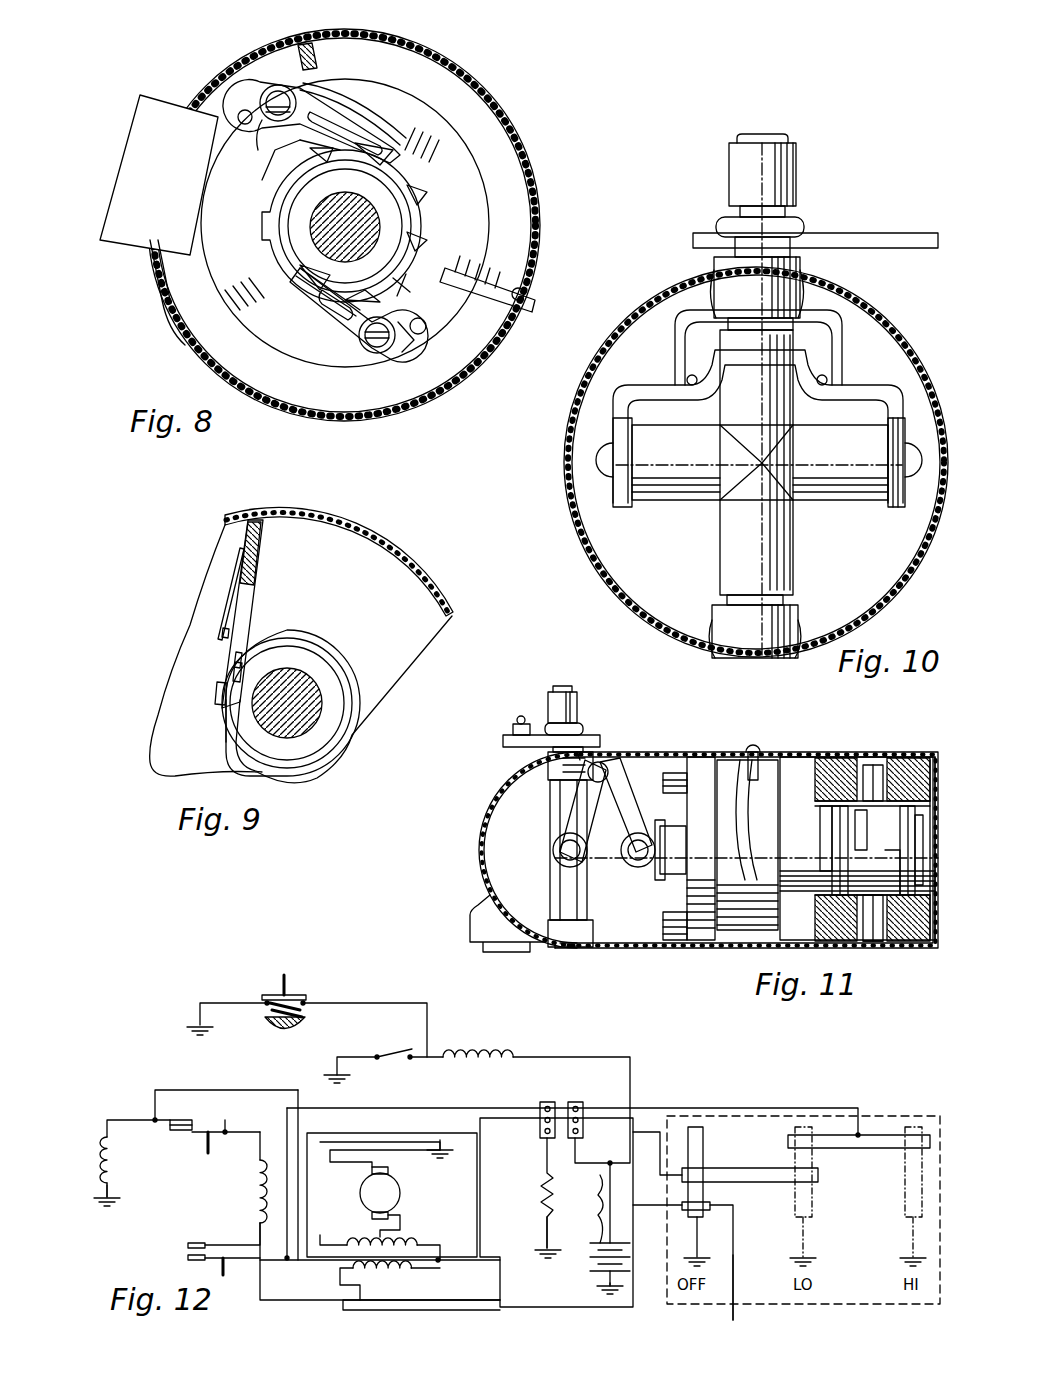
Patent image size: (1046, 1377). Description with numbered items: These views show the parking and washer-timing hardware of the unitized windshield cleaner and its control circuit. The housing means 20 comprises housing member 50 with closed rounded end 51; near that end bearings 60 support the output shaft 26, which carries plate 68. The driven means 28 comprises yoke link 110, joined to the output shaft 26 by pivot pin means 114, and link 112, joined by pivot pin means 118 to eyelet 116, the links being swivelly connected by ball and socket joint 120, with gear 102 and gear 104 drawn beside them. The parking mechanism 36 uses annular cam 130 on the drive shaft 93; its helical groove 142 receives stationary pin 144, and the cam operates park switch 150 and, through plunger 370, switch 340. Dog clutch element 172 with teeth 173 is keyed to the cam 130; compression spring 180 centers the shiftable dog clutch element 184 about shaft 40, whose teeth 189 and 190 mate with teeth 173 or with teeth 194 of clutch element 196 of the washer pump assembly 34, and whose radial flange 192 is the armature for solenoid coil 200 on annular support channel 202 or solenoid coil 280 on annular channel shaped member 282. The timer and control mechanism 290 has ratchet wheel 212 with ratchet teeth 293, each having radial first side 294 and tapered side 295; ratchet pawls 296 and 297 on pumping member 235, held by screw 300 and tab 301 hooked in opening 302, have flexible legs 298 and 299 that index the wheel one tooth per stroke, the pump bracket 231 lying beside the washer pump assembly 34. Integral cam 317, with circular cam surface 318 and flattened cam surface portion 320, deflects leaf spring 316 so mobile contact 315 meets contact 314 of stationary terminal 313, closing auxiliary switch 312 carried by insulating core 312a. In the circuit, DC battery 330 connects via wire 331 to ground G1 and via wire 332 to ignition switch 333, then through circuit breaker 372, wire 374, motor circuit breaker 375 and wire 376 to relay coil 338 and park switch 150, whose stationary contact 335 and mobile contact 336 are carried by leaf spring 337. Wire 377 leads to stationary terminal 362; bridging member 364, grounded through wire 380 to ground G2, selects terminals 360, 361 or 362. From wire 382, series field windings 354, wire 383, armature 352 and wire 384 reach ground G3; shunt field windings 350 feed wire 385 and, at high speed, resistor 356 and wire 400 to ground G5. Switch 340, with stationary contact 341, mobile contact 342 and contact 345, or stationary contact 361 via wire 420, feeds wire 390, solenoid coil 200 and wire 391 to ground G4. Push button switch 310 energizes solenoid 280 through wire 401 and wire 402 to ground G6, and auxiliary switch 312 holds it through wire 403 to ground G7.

In FIG. 8, the housing means 20 is at (478, 62).
In FIG. 9, the housing means 20 is at (370, 522).
In FIG. 10, the housing means 20 is at (880, 300).
In FIG. 11, the housing means 20 is at (672, 750).
In FIG. 8, the housing member 50 is at (500, 150).
In FIG. 9, the housing member 50 is at (420, 562).
In FIG. 10, the housing member 50 is at (905, 574).
In FIG. 11, the housing member 50 is at (626, 946).
In FIG. 8, the drive shaft 93 is at (330, 215).
In FIG. 9, the drive shaft 93 is at (306, 706).
In FIG. 8, the annular plastic cam 317 is at (322, 240).
In FIG. 9, the annular plastic cam 317 is at (330, 668).
In FIG. 8, the circular cam surface 318 is at (292, 256).
In FIG. 9, the circular cam surface 318 is at (355, 740).
In FIG. 8, the flattened cam surface portion 320 is at (290, 212).
In FIG. 9, the flattened cam surface portion 320 is at (228, 722).
In FIG. 8, the ratchet teeth 293 is at (425, 198).
In FIG. 8, the first side of ratchet tooth 294 is at (395, 152).
In FIG. 8, the tapered side of ratchet tooth 295 is at (428, 240).
In FIG. 8, the ratchet wheel 212 is at (405, 285).
In FIG. 8, the screw 300 is at (276, 85).
In FIG. 8, the tab 301 is at (262, 124).
In FIG. 8, the opening 302 is at (240, 112).
In FIG. 8, the flexible leg 299 is at (340, 125).
In FIG. 8, the flexible leg 298 is at (370, 135).
In FIG. 8, the ratchet pawl 296 is at (314, 58).
In FIG. 8, the pumping member 235 is at (322, 140).
In FIG. 8, the washer pump assembly 34 is at (118, 246).
In FIG. 8, the bracket 231 is at (158, 262).
In FIG. 8, the ratchet pawl 297 is at (426, 356).
In FIG. 8, the timer and control mechanism 290 is at (340, 365).
In FIG. 9, the timer and control mechanism 290 is at (330, 620).
In FIG. 9, the auxiliary switch 312 is at (240, 572).
In FIG. 12, the auxiliary switch 312 is at (398, 1053).
In FIG. 9, the insulating core 312a is at (252, 556).
In FIG. 9, the stationary terminal 313 is at (222, 612).
In FIG. 9, the contact 314 is at (224, 640).
In FIG. 9, the mobile contact 315 is at (238, 664).
In FIG. 9, the leaf spring 316 is at (248, 630).
In FIG. 10, the output shaft 26 is at (745, 190).
In FIG. 11, the output shaft 26 is at (553, 706).
In FIG. 10, the plate 68 is at (860, 240).
In FIG. 11, the plate 68 is at (515, 741).
In FIG. 10, the bearings 60 is at (735, 272).
In FIG. 11, the bearings 60 is at (565, 766).
In FIG. 10, the driven means 28 is at (822, 366).
In FIG. 11, the driven means 28 is at (564, 820).
In FIG. 10, the link 110 is at (895, 395).
In FIG. 11, the link 110 is at (566, 830).
In FIG. 10, the pivot pin means 114 is at (606, 460).
In FIG. 11, the pivot pin means 114 is at (570, 852).
In FIG. 11, the pivot pin means 118 is at (638, 852).
In FIG. 11, the ball and socket joint 120 is at (588, 768).
In FIG. 11, the link 112 is at (622, 790).
In FIG. 11, the eyelet 116 is at (660, 870).
In FIG. 11, the gear 102 is at (672, 794).
In FIG. 11, the gear 104 is at (670, 930).
In FIG. 11, the park switch 150 is at (702, 782).
In FIG. 11, the annular cam 130 is at (740, 900).
In FIG. 11, the helical groove 142 is at (762, 790).
In FIG. 11, the stationary pin 144 is at (748, 752).
In FIG. 11, the dog clutch element 172 is at (802, 850).
In FIG. 11, the solenoid coil 200 is at (830, 775).
In FIG. 12, the solenoid coil 200 is at (100, 1140).
In FIG. 11, the shaft 40 is at (875, 768).
In FIG. 11, the annular channel shaped member 282 is at (915, 773).
In FIG. 11, the dogs or teeth 173 is at (825, 805).
In FIG. 11, the compression spring 180 is at (832, 838).
In FIG. 11, the dogs or teeth 189 is at (900, 830).
In FIG. 11, the teeth 194 is at (900, 845).
In FIG. 11, the dogs or teeth 190 is at (900, 858).
In FIG. 11, the clutch element 196 is at (900, 878).
In FIG. 11, the annular support channel 202 is at (826, 888).
In FIG. 11, the shiftable dog clutch element 184 is at (880, 941).
In FIG. 11, the radial flange 192 is at (873, 941).
In FIG. 11, the solenoid coil 280 is at (935, 900).
In FIG. 12, the solenoid coil 280 is at (485, 1050).
In FIG. 11, the closed rounded end 51 is at (482, 860).
In FIG. 11, the parking mechanism 36 is at (690, 946).
In FIG. 12, the push button switch 310 is at (290, 985).
In FIG. 12, the wire 402 is at (228, 1000).
In FIG. 12, the ground G6 is at (195, 1025).
In FIG. 12, the wire 401 is at (345, 1000).
In FIG. 12, the wire 403 is at (360, 1052).
In FIG. 12, the ground G7 is at (345, 1075).
In FIG. 12, the ground G3 is at (452, 1140).
In FIG. 12, the wire 377 is at (540, 1105).
In FIG. 12, the wire 374 is at (590, 1094).
In FIG. 12, the wire 390 is at (130, 1118).
In FIG. 12, the ground G4 is at (95, 1200).
In FIG. 12, the wire 391 is at (120, 1195).
In FIG. 12, the second switch means 340 is at (172, 1118).
In FIG. 12, the stationary contact 341 is at (186, 1122).
In FIG. 12, the mobile contact 342 is at (180, 1131).
In FIG. 12, the plunger 370 is at (222, 1130).
In FIG. 12, the contact 345 is at (208, 1155).
In FIG. 12, the wire 385 is at (320, 1133).
In FIG. 12, the relay coil 338 is at (256, 1200).
In FIG. 12, the stationary contact 335 is at (188, 1246).
In FIG. 12, the mobile contact 336 is at (188, 1258).
In FIG. 12, the wire 383 is at (366, 1190).
In FIG. 12, the wire 384 is at (402, 1160).
In FIG. 12, the wire 382 is at (322, 1240).
In FIG. 12, the armature 352 is at (400, 1205).
In FIG. 12, the series field windings 354 is at (420, 1240).
In FIG. 12, the motor circuit breaker 375 is at (410, 1272).
In FIG. 12, the wire 376 is at (345, 1280).
In FIG. 12, the leaf spring 337 is at (290, 1260).
In FIG. 12, the shunt field windings 350 is at (500, 1290).
In FIG. 12, the resistor 356 is at (540, 1175).
In FIG. 12, the wire 400 is at (540, 1215).
In FIG. 12, the ground G5 is at (540, 1248).
In FIG. 12, the circuit breaker 372 is at (600, 1185).
In FIG. 12, the ignition switch 333 is at (596, 1230).
In FIG. 12, the wire 332 is at (612, 1225).
In FIG. 12, the DC battery 330 is at (614, 1250).
In FIG. 12, the wire 331 is at (600, 1288).
In FIG. 12, the ground G1 is at (622, 1290).
In FIG. 12, the bridging member 364 is at (697, 1127).
In FIG. 12, the stationary terminal 362 is at (880, 1135).
In FIG. 12, the stationary terminal 360 is at (735, 1168).
In FIG. 12, the stationary contact 361 is at (712, 1205).
In FIG. 12, the wire 380 is at (905, 1215).
In FIG. 12, the ground G2 is at (710, 1262).
In FIG. 12, the wire 420 is at (735, 1255).